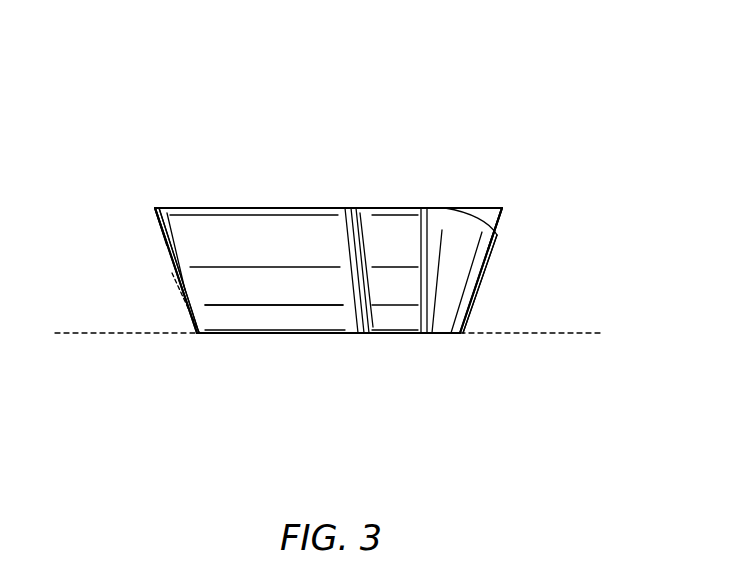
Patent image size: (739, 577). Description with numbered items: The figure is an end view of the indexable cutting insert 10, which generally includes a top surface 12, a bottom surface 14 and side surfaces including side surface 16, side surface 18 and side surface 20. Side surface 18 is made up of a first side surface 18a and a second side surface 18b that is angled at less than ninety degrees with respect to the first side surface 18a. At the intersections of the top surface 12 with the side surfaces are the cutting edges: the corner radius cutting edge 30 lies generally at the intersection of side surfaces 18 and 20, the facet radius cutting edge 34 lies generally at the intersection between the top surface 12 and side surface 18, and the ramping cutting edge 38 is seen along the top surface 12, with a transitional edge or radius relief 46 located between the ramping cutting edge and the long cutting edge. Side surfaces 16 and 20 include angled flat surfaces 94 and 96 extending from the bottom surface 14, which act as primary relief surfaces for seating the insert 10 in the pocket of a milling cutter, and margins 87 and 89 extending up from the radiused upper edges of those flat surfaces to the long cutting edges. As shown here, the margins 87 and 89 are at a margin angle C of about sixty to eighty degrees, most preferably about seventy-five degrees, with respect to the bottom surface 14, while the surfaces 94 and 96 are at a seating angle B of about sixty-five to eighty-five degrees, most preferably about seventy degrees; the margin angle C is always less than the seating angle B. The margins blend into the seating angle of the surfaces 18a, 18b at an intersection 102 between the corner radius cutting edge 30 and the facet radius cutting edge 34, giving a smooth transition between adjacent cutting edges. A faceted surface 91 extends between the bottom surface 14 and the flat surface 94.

The indexable cutting insert 10 is at (103, 86).
The top surface 12 is at (417, 204).
The bottom surface 14 is at (393, 348).
The side surface 16 is at (139, 245).
The side surface 18 is at (308, 292).
The first side surface 18a is at (233, 313).
The second side surface 18b is at (393, 295).
The side surface 20 is at (516, 250).
The corner radius cutting edge 30 is at (500, 212).
The facet radius cutting edge 34 is at (370, 208).
The ramping cutting edge 38 is at (275, 208).
The transitional edge or radius relief 46 is at (155, 208).
The margin 87 is at (160, 228).
The margin 89 is at (500, 223).
The faceted surface 91 is at (183, 333).
The angled flat surface 94 is at (165, 262).
The angled flat surface 96 is at (488, 268).
The intersection 102 is at (483, 208).
The seating angle B is at (484, 292).
The margin angle C is at (171, 291).